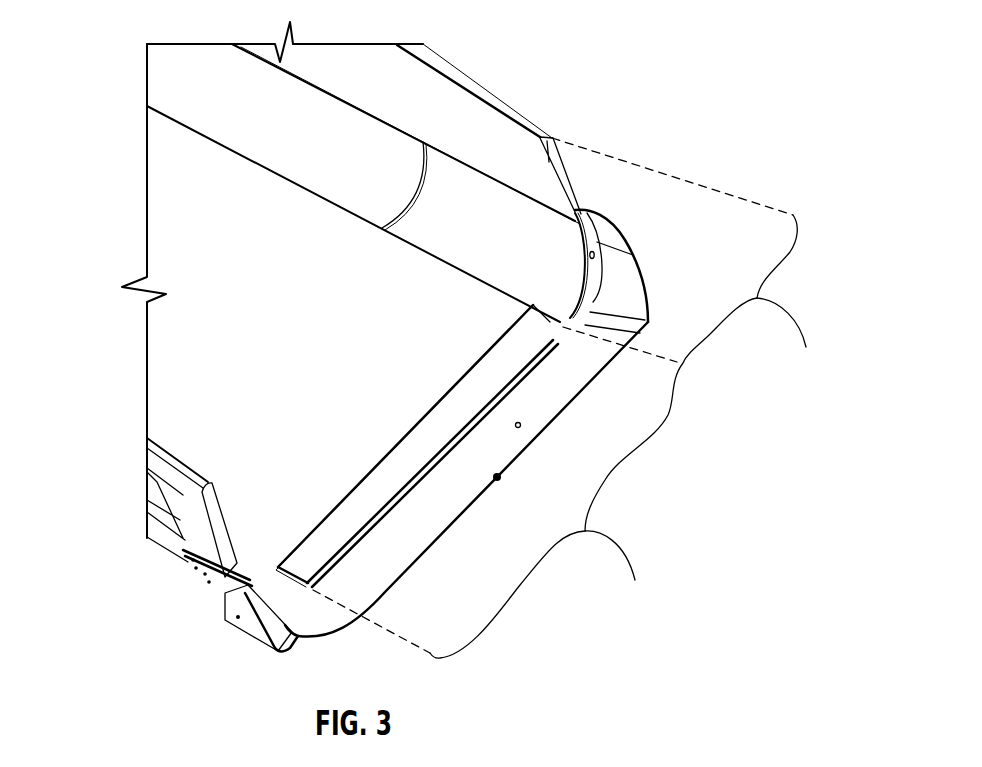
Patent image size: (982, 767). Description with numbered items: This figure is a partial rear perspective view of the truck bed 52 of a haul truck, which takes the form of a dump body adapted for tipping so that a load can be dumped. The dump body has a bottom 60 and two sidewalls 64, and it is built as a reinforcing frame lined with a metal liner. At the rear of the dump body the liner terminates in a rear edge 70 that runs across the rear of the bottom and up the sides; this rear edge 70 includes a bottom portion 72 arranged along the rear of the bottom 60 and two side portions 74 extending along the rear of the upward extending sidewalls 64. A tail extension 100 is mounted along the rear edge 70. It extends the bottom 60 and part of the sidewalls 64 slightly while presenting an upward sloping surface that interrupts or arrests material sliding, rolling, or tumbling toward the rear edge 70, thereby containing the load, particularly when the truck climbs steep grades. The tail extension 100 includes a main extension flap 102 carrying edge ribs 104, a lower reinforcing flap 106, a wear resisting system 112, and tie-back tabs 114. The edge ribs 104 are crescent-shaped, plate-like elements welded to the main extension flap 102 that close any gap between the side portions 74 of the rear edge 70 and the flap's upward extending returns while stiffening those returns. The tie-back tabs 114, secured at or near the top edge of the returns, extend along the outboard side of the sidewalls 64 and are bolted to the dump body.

The truck bed 52 is at (498, 45).
The bottom 60 is at (294, 351).
The sidewalls 64 is at (442, 122).
The rear edge 70 is at (496, 196).
The bottom portion 72 is at (593, 478).
The side portions 74 is at (786, 297).
The tail extension 100 is at (677, 112).
The main extension flap 102 is at (522, 428).
The edge ribs 104 is at (588, 258).
The lower reinforcing flap 106 is at (298, 638).
The wear resisting system 112 is at (485, 378).
The tie-back tabs 114 is at (215, 592).